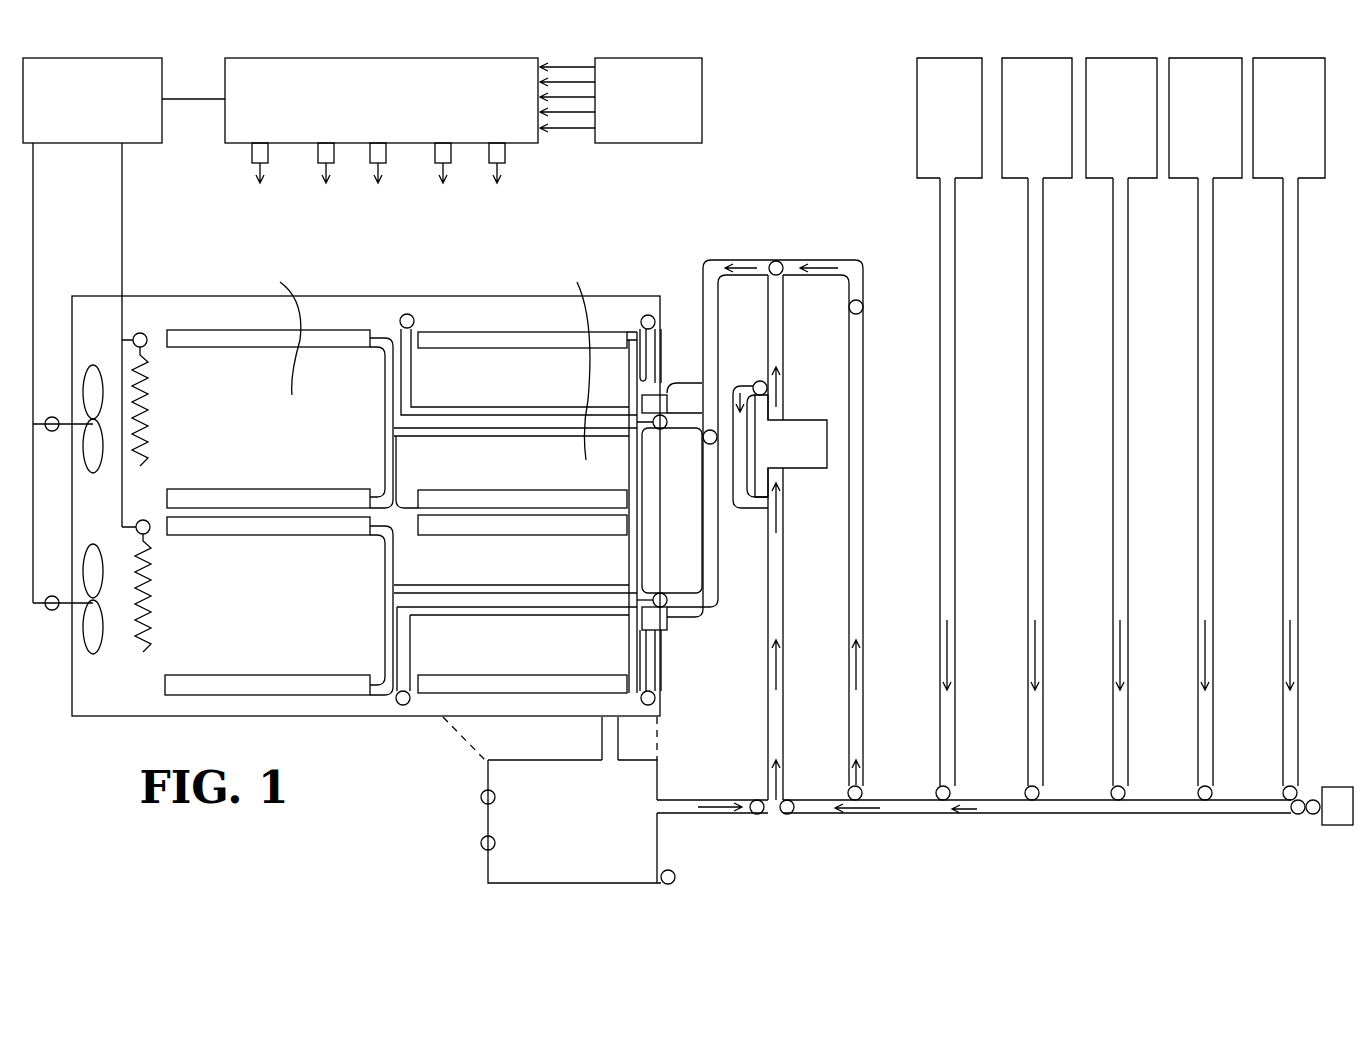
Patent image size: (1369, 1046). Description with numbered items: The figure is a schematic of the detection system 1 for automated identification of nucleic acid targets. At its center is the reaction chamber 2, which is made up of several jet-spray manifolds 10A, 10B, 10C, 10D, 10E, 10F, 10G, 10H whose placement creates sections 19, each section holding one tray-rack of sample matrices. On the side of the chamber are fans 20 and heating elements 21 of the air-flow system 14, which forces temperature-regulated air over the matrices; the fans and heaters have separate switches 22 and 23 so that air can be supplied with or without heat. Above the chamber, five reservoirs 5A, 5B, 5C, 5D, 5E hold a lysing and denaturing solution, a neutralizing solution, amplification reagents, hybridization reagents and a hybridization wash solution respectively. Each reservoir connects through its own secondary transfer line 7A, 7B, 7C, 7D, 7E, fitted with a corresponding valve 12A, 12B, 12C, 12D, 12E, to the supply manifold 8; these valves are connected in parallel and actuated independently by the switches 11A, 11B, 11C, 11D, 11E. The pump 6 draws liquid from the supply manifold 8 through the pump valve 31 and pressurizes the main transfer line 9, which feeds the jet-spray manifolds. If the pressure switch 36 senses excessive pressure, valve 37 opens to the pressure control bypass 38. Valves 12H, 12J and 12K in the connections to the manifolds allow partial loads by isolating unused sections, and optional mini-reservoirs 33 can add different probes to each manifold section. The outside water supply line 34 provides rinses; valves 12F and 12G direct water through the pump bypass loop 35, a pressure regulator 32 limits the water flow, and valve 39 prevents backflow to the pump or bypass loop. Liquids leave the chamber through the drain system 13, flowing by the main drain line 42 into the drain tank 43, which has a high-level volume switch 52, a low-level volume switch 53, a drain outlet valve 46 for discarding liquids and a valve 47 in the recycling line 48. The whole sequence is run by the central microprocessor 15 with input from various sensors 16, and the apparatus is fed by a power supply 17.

The detection system 1 is at (820, 100).
The reaction chamber 2 is at (360, 285).
The reservoir 5A is at (940, 58).
The reservoir 5B is at (1050, 58).
The reservoir 5C is at (1135, 58).
The reservoir 5D is at (1217, 58).
The reservoir 5E is at (1302, 58).
The pump 6 is at (810, 420).
The secondary transfer line 7A is at (956, 408).
The secondary transfer line 7B is at (1044, 408).
The secondary transfer line 7C is at (1129, 408).
The secondary transfer line 7D is at (1214, 408).
The secondary transfer line 7E is at (1299, 408).
The supply manifold 8 is at (1092, 816).
The main transfer line 9 is at (718, 300).
The jet-spray manifold 10A is at (498, 348).
The jet-spray manifold 10B is at (548, 490).
The jet-spray manifold 10C is at (258, 348).
The jet-spray manifold 10D is at (275, 490).
The jet-spray manifold 10E is at (508, 537).
The jet-spray manifold 10F is at (548, 677).
The jet-spray manifold 10G is at (258, 537).
The jet-spray manifold 10H is at (292, 677).
The switch 11A is at (257, 178).
The switch 11B is at (324, 178).
The switch 11C is at (376, 178).
The switch 11D is at (442, 178).
The switch 11E is at (495, 178).
The valve 12A is at (950, 788).
The valve 12B is at (1040, 788).
The valve 12C is at (1125, 788).
The valve 12D is at (1212, 788).
The valve 12E is at (1296, 788).
The valve 12F is at (1311, 815).
The valve 12G is at (861, 788).
The valve 12H is at (707, 445).
The valve 12J is at (663, 429).
The valve 12K is at (660, 593).
The drain system 13 is at (450, 868).
The air-flow system 14 is at (60, 670).
The central microprocessor 15 is at (392, 58).
The sensors 16 is at (690, 58).
The power supply 17 is at (162, 70).
The section 19 is at (420, 364).
The fan 20 is at (104, 366).
The heating element 21 is at (152, 412).
The switch 22 is at (55, 417).
The switch 23 is at (140, 333).
The pump valve 31 is at (790, 815).
The pressure regulator 32 is at (1296, 815).
The mini-reservoir 33 is at (410, 314).
The outside water supply line 34 is at (864, 482).
The pump bypass loop 35 is at (828, 262).
The pressure switch 36 is at (863, 308).
The valve 37 is at (760, 381).
The pressure control bypass 38 is at (750, 508).
The valve 39 is at (776, 261).
The main drain line 42 is at (602, 740).
The drain tank 43 is at (528, 760).
The drain outlet valve 46 is at (675, 871).
The valve 47 is at (756, 815).
The recycling line 48 is at (712, 800).
The high-level volume switch 52 is at (481, 797).
The low-level volume switch 53 is at (481, 842).